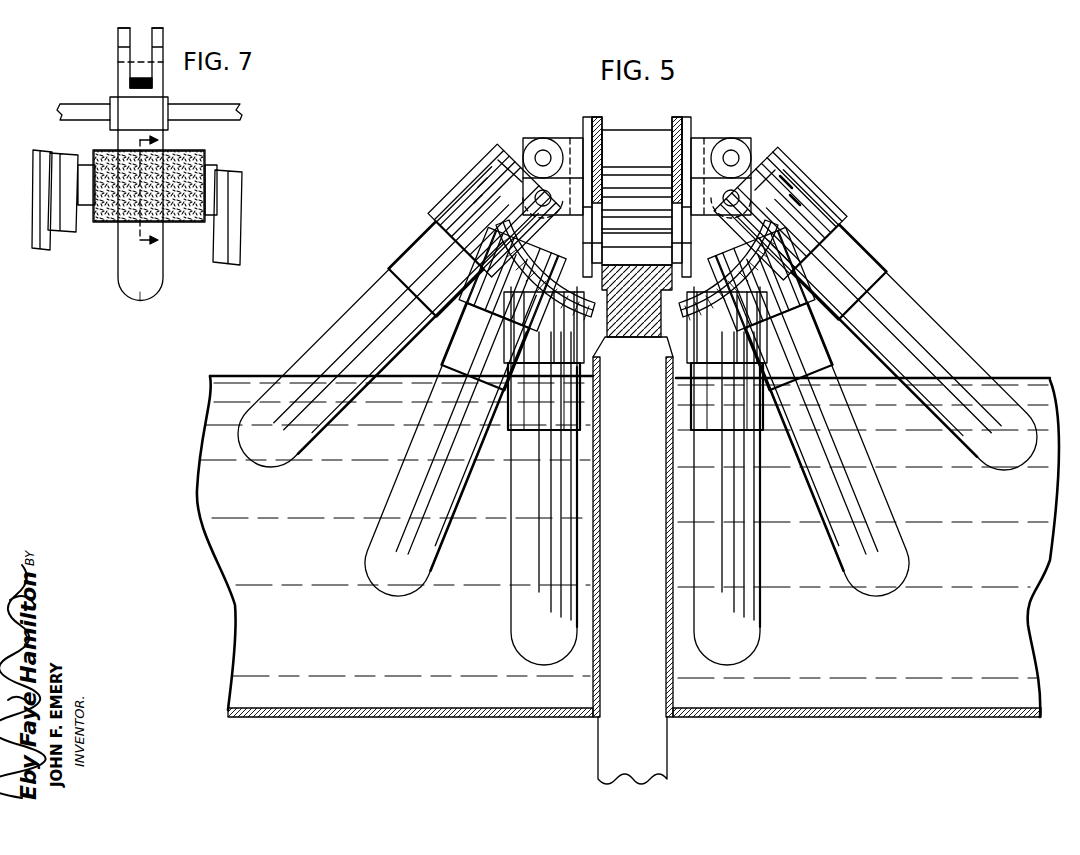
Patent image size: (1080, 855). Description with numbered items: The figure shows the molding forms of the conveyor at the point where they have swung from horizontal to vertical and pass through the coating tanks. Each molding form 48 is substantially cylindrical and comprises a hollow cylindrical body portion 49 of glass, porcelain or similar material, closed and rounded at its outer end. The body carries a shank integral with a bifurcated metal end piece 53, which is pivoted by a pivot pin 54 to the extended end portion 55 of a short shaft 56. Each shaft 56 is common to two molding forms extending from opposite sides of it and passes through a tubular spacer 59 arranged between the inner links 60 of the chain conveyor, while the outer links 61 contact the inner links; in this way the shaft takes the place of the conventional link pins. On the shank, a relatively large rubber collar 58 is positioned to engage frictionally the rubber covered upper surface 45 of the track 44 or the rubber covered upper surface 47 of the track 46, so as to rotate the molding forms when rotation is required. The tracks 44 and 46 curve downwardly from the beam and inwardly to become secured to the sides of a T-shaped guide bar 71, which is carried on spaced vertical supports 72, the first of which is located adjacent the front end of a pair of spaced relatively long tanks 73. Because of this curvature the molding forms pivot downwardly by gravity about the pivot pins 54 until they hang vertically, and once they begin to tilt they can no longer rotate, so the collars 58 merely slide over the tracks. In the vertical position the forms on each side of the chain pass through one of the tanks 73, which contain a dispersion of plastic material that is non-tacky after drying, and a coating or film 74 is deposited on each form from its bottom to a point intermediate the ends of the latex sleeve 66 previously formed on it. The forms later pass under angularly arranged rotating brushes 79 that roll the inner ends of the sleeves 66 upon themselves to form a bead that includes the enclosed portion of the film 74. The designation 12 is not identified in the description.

In FIG. 7, the direction arrows 12 is at (165, 203).
In FIG. 5, the longitudinally extending track 44 is at (786, 175).
In FIG. 7, the longitudinally extending track 44 is at (233, 118).
In FIG. 5, the rubber covered upper surface 45 is at (796, 194).
In FIG. 5, the longitudinal track 46 is at (487, 176).
In FIG. 5, the rubber covered upper surface 47 is at (482, 193).
In FIG. 7, the molding form 48 is at (113, 279).
In FIG. 5, the hollow cylindrical body portion 49 is at (338, 338).
In FIG. 5, the bifurcated metal end piece 53 is at (527, 165).
In FIG. 7, the bifurcated metal end piece 53 is at (131, 84).
In FIG. 5, the pivot pin 54 is at (541, 196).
In FIG. 7, the pivot pin 54 is at (120, 67).
In FIG. 5, the extended end portion 55 is at (566, 146).
In FIG. 7, the extended end portion 55 is at (121, 56).
In FIG. 5, the short shaft 56 is at (583, 118).
In FIG. 5, the rubber collar 58 is at (470, 192).
In FIG. 7, the rubber collar 58 is at (160, 110).
In FIG. 5, the tubular spacer 59 is at (612, 133).
In FIG. 5, the inner links 60 is at (608, 104).
In FIG. 5, the outer links 61 is at (586, 117).
In FIG. 5, the sleeve 66 is at (440, 240).
In FIG. 5, the T-shaped guide bar 71 is at (615, 330).
In FIG. 5, the vertical support 72 is at (601, 757).
In FIG. 5, the tank 73 is at (508, 717).
In FIG. 7, the coating or film 74 is at (160, 284).
In FIG. 7, the rotating brush 79 is at (180, 163).